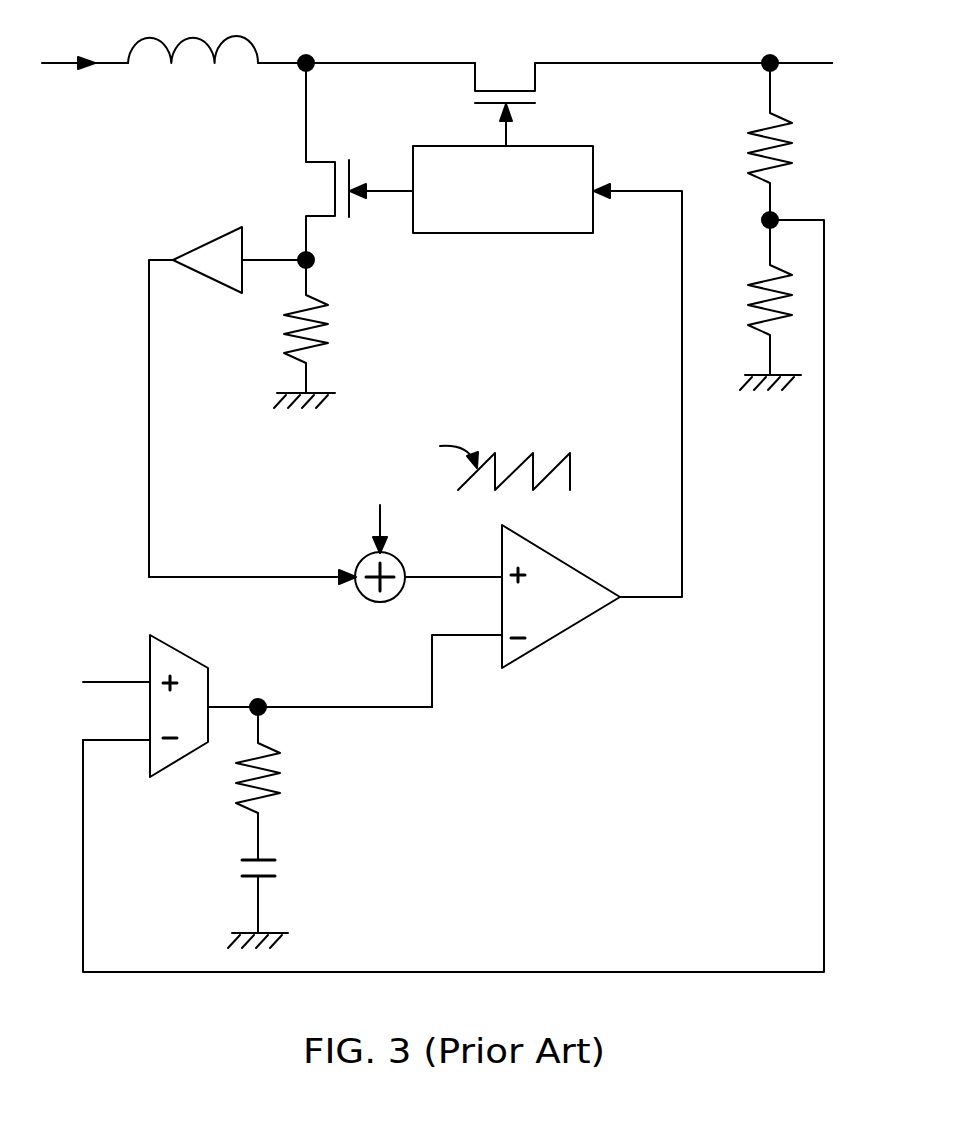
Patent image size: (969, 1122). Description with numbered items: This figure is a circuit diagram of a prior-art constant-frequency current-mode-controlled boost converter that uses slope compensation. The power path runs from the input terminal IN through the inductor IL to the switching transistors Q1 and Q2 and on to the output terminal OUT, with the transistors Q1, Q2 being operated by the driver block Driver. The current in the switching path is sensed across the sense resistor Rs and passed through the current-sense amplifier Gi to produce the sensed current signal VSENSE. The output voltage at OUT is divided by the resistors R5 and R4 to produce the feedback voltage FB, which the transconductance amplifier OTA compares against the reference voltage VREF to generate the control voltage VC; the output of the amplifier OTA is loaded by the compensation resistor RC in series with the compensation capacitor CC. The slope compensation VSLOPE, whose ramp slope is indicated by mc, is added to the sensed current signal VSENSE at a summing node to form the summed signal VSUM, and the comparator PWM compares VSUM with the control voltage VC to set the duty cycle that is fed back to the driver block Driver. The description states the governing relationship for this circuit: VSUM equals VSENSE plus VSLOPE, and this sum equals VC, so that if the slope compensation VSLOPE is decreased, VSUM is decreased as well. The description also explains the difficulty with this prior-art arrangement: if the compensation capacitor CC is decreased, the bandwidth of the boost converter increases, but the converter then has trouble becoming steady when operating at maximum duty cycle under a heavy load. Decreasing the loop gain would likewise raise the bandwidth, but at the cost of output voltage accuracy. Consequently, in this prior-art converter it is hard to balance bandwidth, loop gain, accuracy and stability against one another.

The input terminal IN is at (74, 64).
The inductor IL is at (174, 47).
The output terminal OUT is at (836, 64).
The high-side switch transistor Q1 is at (505, 95).
The low-side switch transistor Q2 is at (358, 157).
The driver circuit Driver is at (503, 189).
The current sense amplifier Gi is at (244, 402).
The sense resistor Rs is at (321, 334).
The feedback resistor R5 is at (791, 141).
The feedback resistor R4 is at (782, 305).
The sensed current signal VSENSE is at (252, 566).
The slope compensation VSLOPE is at (380, 515).
The summed signal VSUM is at (453, 562).
The slope compensation ramp mc is at (498, 457).
The PWM comparator PWM is at (526, 616).
The operational transconductance amplifier OTA is at (200, 706).
The reference voltage VREF is at (116, 669).
The feedback voltage FB is at (116, 727).
The control voltage VC is at (345, 694).
The compensation resistor RC is at (283, 783).
The compensation capacitor CC is at (279, 904).